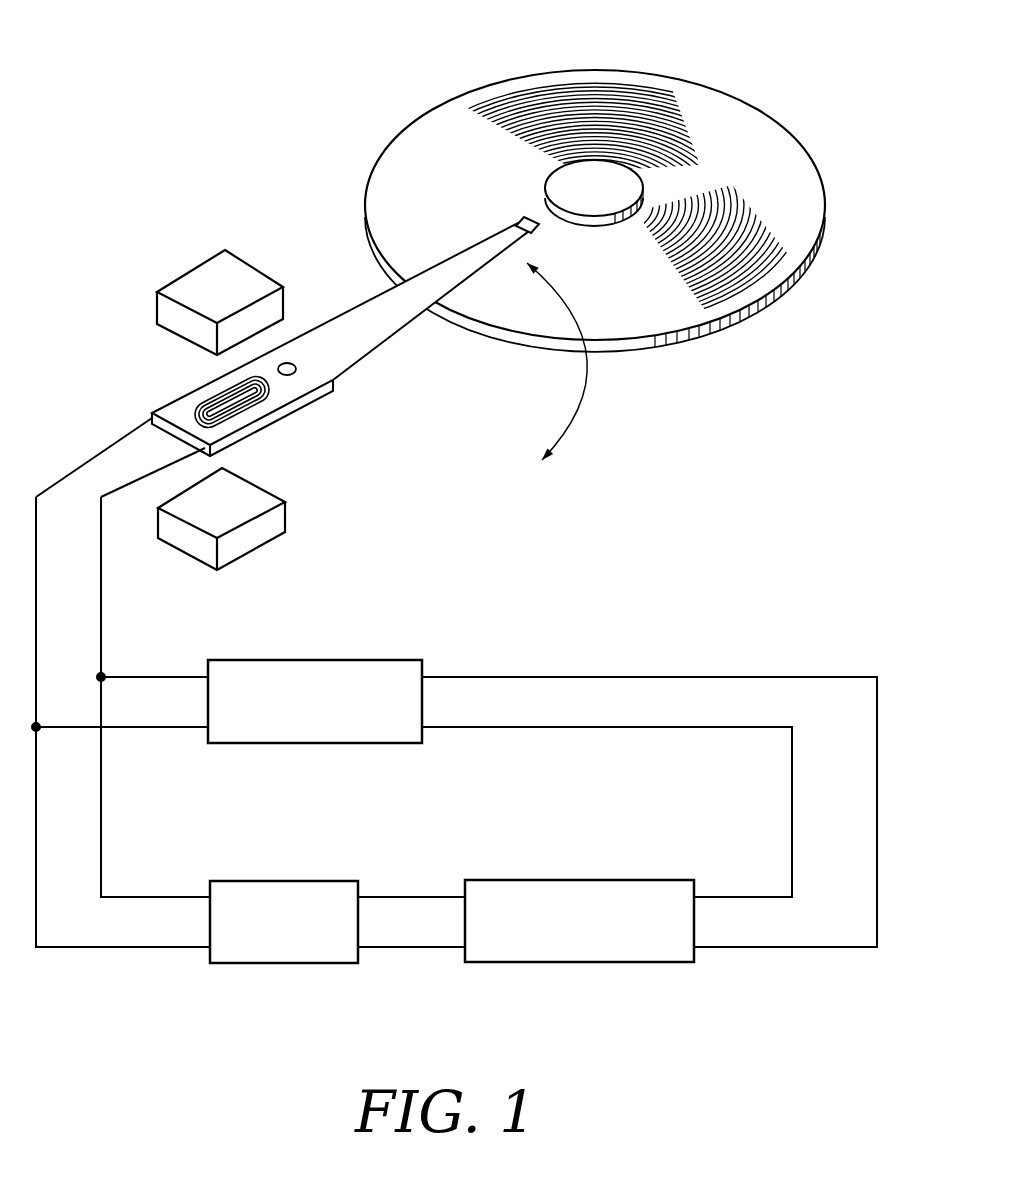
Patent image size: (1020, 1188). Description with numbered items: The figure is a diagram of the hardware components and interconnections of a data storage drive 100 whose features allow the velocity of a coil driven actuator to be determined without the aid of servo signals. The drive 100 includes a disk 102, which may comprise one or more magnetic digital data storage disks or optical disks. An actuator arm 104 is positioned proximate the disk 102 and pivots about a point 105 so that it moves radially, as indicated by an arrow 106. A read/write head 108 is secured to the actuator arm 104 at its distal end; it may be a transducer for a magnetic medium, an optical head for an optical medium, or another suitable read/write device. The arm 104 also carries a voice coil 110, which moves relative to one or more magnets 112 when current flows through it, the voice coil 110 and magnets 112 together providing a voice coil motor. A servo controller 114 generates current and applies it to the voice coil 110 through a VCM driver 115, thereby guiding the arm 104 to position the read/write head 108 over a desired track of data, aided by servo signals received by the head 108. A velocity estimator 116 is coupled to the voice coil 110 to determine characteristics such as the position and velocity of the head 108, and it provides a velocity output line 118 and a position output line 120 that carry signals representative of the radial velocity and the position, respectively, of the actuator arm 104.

The data storage drive 100 is at (200, 36).
The disk 102 is at (397, 135).
The actuator arm 104 is at (367, 353).
The pivot point 105 is at (290, 376).
The arrow 106 is at (587, 387).
The read/write head 108 is at (520, 222).
The voice coil 110 is at (202, 398).
The magnets 112 is at (197, 263).
The servo controller 114 is at (585, 962).
The VCM driver 115 is at (258, 963).
The velocity estimator 116 is at (310, 743).
The velocity output line 118 is at (500, 673).
The position output line 120 is at (500, 728).